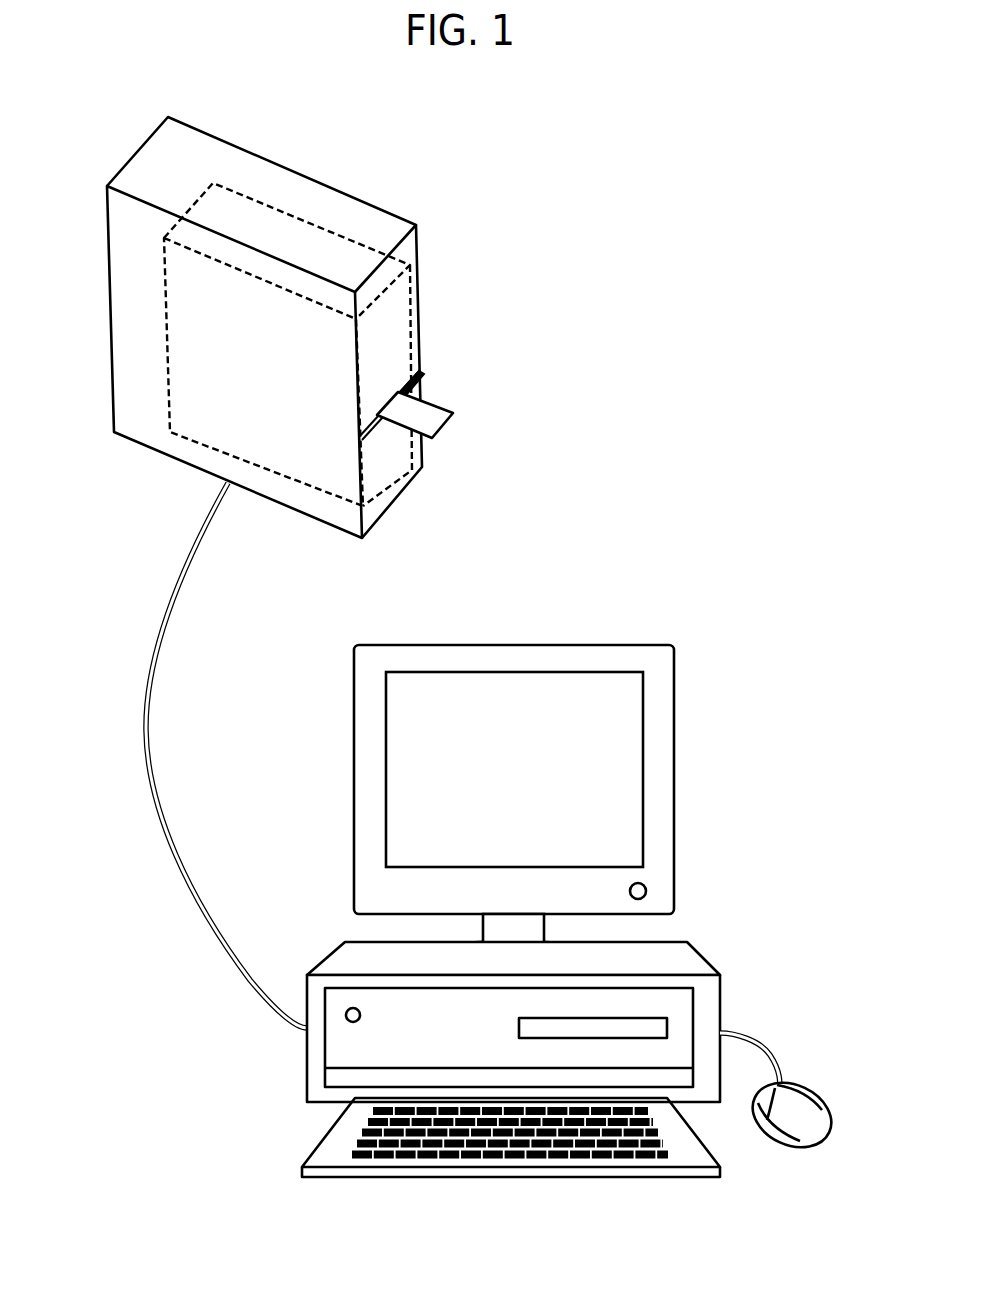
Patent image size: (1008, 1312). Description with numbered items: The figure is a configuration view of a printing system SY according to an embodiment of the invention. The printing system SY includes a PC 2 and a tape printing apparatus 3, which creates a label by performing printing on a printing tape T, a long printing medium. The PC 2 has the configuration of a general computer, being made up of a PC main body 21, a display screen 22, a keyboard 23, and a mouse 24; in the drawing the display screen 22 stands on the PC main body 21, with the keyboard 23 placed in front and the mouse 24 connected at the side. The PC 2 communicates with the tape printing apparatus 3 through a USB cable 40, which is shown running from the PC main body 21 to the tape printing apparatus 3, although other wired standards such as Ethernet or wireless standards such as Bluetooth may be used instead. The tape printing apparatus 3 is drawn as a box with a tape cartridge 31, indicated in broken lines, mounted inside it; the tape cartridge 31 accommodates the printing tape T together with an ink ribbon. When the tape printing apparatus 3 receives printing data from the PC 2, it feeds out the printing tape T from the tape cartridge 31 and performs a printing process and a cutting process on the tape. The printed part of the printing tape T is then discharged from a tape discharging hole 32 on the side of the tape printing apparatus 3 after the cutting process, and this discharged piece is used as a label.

The printing system SY is at (668, 216).
The tape printing apparatus 3 is at (302, 327).
The tape cartridge 31 is at (297, 210).
The tape discharging hole 32 is at (413, 371).
The printing tape T is at (437, 418).
The USB cable 40 is at (147, 754).
The PC 2 is at (577, 932).
The PC main body 21 is at (703, 953).
The display screen 22 is at (675, 828).
The keyboard 23 is at (688, 1157).
The mouse 24 is at (812, 1105).